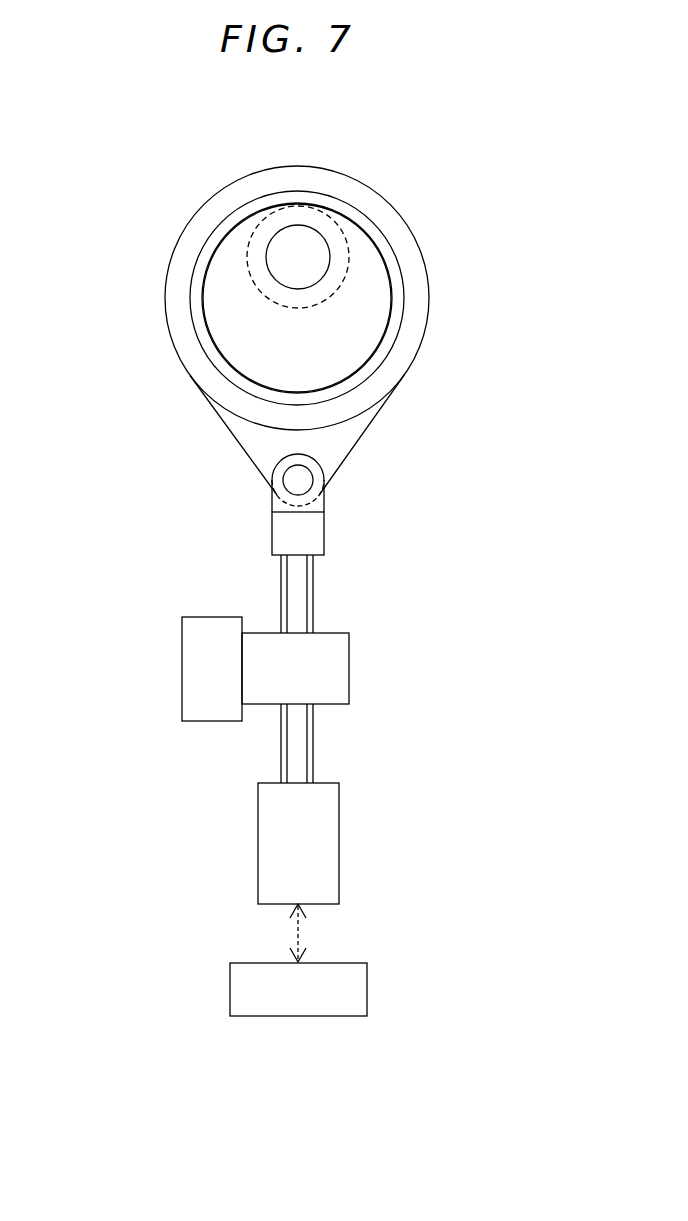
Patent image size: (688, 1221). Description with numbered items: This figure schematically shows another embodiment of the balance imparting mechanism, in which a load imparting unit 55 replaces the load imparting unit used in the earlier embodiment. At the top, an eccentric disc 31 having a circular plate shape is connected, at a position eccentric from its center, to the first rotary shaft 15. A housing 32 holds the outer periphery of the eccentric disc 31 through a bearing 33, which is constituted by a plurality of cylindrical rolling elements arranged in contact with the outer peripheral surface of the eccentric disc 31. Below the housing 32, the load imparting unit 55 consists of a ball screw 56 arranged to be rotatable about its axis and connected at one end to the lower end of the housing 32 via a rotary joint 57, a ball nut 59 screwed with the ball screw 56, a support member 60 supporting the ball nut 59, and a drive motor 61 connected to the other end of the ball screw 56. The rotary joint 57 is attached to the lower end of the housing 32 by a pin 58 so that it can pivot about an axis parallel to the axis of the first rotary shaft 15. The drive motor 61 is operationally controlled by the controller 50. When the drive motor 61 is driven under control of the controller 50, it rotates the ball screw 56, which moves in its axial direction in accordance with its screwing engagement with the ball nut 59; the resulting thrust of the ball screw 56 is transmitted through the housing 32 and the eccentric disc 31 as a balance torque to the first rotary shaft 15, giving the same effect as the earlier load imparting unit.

The first rotary shaft 15 is at (322, 220).
The eccentric disc 31 is at (280, 244).
The housing 32 is at (427, 272).
The bearing 33 is at (388, 247).
The controller 50 is at (362, 988).
The load imparting unit 55 is at (226, 679).
The ball screw 56 is at (308, 589).
The rotary joint 57 is at (315, 537).
The pin 58 is at (308, 482).
The ball nut 59 is at (340, 671).
The support member 60 is at (183, 665).
The drive motor 61 is at (332, 850).